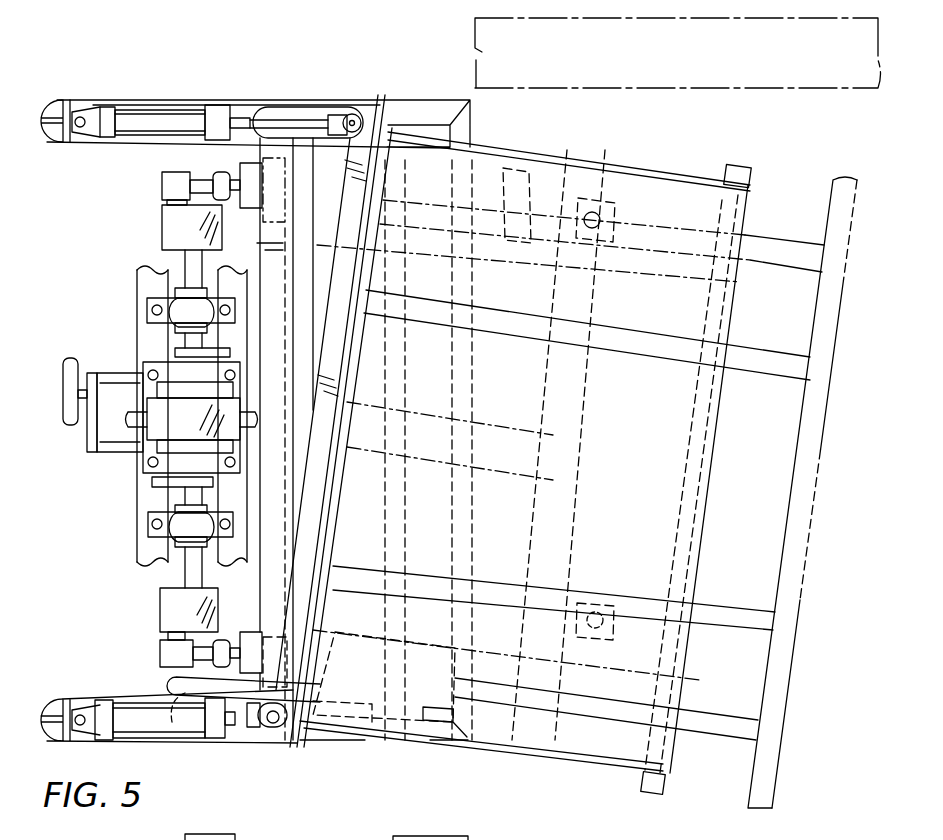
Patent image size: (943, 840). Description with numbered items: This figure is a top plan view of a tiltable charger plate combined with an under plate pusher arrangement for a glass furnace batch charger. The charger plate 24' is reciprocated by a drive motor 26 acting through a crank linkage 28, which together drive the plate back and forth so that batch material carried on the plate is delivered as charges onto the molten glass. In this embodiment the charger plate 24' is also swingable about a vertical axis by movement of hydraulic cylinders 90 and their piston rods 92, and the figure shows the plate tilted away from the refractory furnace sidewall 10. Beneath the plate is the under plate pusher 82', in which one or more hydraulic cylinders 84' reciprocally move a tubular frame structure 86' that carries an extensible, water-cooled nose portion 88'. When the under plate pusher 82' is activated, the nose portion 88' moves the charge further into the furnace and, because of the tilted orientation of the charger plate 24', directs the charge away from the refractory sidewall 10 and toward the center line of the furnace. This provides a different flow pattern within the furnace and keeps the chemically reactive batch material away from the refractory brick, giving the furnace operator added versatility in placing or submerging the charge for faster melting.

The furnace sidewall 10 is at (478, 50).
The hydraulic cylinders 90 is at (153, 117).
The piston rods 92 is at (247, 117).
The crank linkage 28 is at (172, 185).
The drive motor 26 is at (113, 447).
The charger plate 24' is at (513, 455).
The hydraulic cylinders 84' is at (464, 456).
The under plate pusher 82' is at (802, 473).
The tubular frame structure 86' is at (495, 470).
The nose portion 88' is at (759, 502).